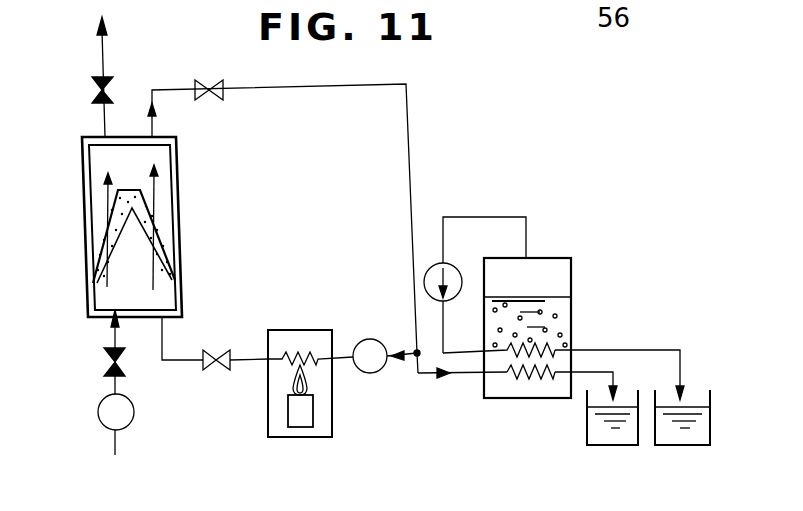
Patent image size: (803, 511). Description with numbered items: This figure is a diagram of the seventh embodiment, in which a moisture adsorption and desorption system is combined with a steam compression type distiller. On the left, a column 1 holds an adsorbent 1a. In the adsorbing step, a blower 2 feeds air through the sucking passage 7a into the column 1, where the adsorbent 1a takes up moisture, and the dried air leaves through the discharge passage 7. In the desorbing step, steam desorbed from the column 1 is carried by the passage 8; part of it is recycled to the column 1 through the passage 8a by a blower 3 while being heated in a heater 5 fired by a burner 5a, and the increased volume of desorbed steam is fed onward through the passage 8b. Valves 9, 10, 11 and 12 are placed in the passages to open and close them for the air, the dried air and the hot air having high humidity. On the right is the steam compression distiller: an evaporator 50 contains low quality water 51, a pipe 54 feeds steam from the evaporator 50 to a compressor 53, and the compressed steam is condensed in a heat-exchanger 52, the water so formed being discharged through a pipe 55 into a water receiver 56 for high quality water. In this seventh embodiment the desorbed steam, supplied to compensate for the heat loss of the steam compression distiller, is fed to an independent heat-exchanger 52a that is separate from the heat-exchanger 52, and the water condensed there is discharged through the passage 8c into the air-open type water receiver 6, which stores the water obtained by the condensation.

The column 1 is at (177, 180).
The adsorbent 1a is at (167, 238).
The blower 2 is at (134, 413).
The blower 3 is at (360, 339).
The heater 5 is at (302, 330).
The burner 5a is at (313, 410).
The water receiver 6 is at (585, 437).
The discharge passage 7 is at (103, 55).
The sucking passage 7a is at (112, 333).
The passage 8 is at (315, 85).
The passage 8a is at (412, 352).
The passage 8b is at (452, 377).
The passage 8c is at (613, 385).
The valve 9 is at (107, 82).
The valve 10 is at (105, 372).
The valve 11 is at (212, 80).
The valve 12 is at (212, 370).
The evaporator 50 is at (571, 270).
The low quality water 51 is at (560, 312).
The heat-exchanger 52 is at (508, 355).
The independent heat-exchanger 52a is at (523, 375).
The compressor 53 is at (450, 262).
The pipe 54 is at (528, 232).
The pipe 55 is at (630, 350).
The water receiver 56 is at (708, 390).